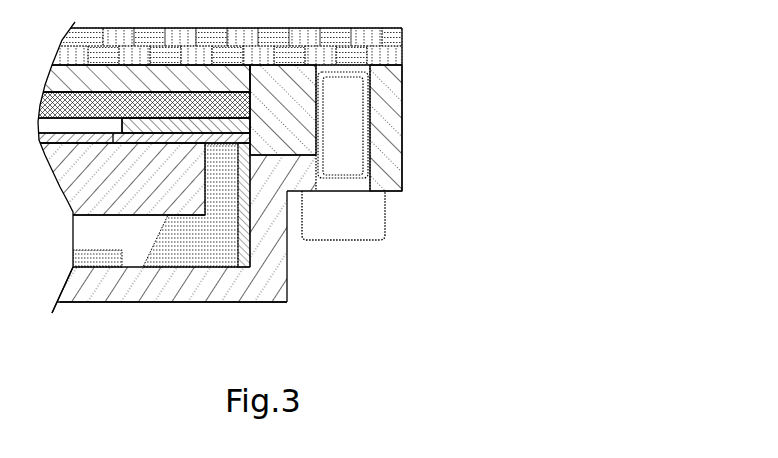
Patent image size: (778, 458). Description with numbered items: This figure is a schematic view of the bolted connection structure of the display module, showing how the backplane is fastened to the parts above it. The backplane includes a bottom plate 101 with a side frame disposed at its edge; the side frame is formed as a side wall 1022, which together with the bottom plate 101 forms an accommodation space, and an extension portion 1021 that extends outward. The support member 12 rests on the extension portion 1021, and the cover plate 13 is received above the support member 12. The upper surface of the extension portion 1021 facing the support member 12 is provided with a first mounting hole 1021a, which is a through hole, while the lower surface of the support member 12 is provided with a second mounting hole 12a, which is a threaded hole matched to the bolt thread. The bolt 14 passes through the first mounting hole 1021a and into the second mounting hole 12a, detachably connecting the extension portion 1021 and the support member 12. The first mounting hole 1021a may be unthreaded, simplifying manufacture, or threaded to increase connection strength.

The cover plate 13 is at (384, 43).
The second mounting hole 12a is at (368, 85).
The support member 12 is at (383, 120).
The first mounting hole 1021a is at (370, 160).
The extension portion 1021 is at (392, 176).
The bolt 14 is at (376, 232).
The side wall 1022 is at (275, 290).
The bottom plate 101 is at (162, 300).